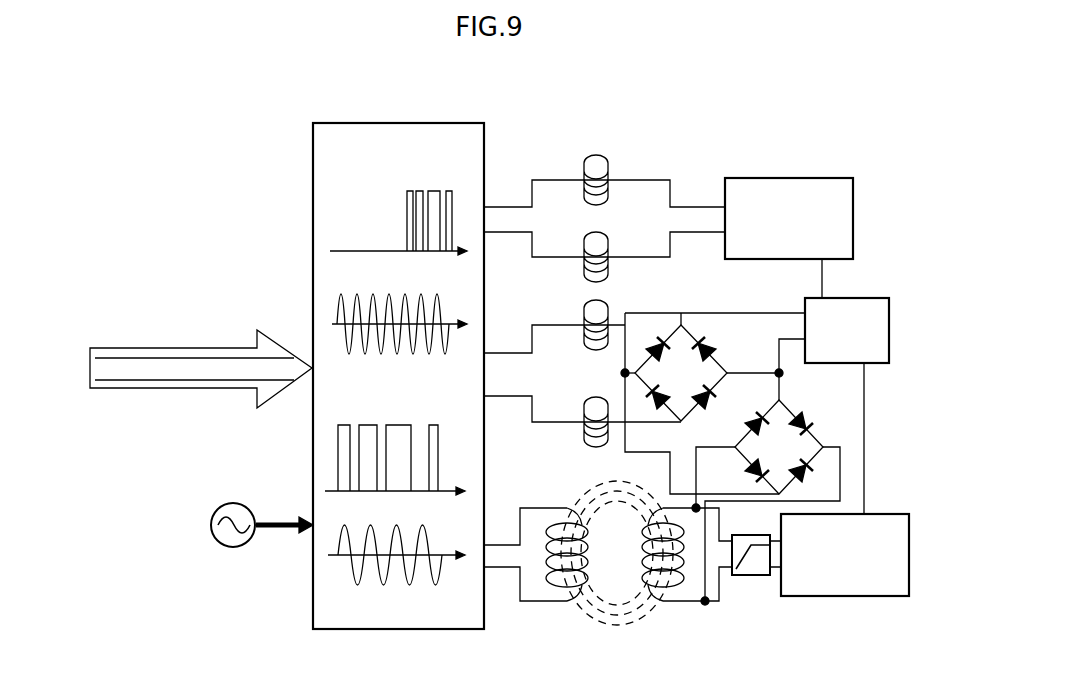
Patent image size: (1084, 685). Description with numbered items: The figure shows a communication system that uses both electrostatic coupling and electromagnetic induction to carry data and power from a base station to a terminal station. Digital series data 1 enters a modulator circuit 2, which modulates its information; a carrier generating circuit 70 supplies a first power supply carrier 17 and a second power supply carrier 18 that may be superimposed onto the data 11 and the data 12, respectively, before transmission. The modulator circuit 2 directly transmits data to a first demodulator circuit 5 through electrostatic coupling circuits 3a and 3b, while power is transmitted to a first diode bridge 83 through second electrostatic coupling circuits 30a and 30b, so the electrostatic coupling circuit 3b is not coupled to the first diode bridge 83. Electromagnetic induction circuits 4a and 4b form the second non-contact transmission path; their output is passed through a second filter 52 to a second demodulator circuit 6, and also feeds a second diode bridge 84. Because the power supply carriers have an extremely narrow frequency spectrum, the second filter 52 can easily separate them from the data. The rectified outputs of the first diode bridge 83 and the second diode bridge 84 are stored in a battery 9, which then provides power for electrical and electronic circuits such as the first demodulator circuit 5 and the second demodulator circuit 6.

The digital series data 1 is at (181, 346).
The modulator circuit 2 is at (453, 123).
The electrostatic coupling circuit 3a is at (550, 180).
The electrostatic coupling circuit 3b is at (638, 180).
The electromagnetic induction circuit 4a is at (543, 602).
The electromagnetic induction circuit 4b is at (677, 602).
The first demodulator circuit 5 is at (830, 178).
The second demodulator circuit 6 is at (808, 598).
The battery 9 is at (878, 298).
The data 11 is at (403, 211).
The data 12 is at (400, 451).
The first power supply carrier 17 is at (404, 311).
The second power supply carrier 18 is at (401, 543).
The electrostatic coupling circuit 30a is at (549, 325).
The electrostatic coupling circuit 30b is at (625, 325).
The second filter 52 is at (750, 577).
The carrier generating circuit 70 is at (210, 530).
The first diode bridge 83 is at (711, 343).
The second diode bridge 84 is at (796, 410).